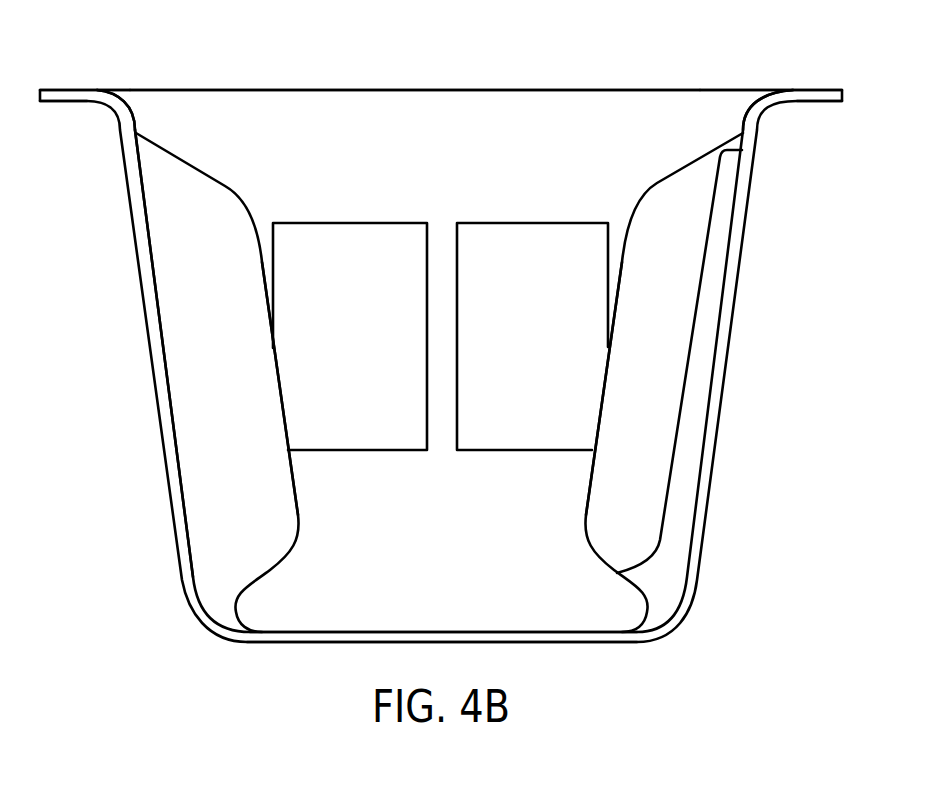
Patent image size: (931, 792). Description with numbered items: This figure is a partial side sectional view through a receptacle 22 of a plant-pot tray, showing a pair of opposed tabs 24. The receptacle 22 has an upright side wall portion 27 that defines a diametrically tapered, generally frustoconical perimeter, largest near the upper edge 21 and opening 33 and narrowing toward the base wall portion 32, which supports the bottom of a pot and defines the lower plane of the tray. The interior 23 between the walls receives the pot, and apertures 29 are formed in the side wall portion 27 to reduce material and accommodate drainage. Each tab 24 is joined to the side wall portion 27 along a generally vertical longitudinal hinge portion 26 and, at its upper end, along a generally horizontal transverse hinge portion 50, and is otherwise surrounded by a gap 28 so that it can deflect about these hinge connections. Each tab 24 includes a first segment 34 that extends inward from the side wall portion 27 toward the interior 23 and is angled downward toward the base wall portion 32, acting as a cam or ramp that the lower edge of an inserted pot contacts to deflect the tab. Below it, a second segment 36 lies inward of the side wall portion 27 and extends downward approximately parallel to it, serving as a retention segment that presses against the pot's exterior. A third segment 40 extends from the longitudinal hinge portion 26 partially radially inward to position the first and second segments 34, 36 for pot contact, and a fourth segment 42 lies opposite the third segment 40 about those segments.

The upper edge 21 is at (127, 88).
The receptacle 22 is at (443, 102).
The interior 23 is at (445, 210).
The tab 24 is at (263, 210).
The longitudinal hinge portion 26 is at (178, 448).
The side wall portion 27 is at (148, 328).
The gap 28 is at (685, 483).
The aperture 29 is at (275, 262).
The base wall portion 32 is at (457, 630).
The opening 33 is at (708, 87).
The first segment 34 is at (202, 163).
The second segment 36 is at (272, 327).
The third segment 40 is at (224, 333).
The fourth segment 42 is at (660, 375).
The transverse hinge portion 50 is at (135, 128).